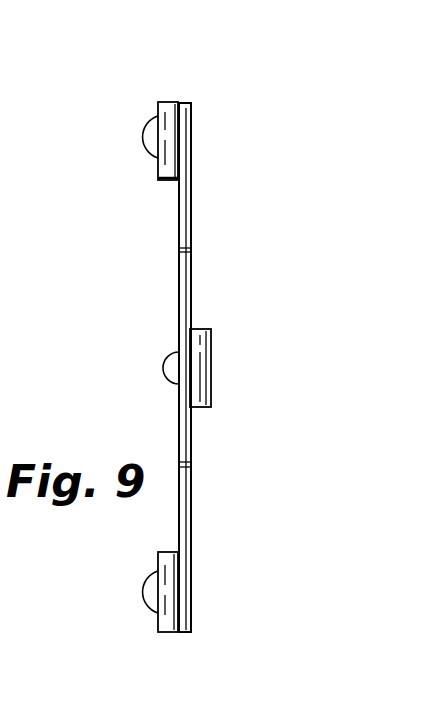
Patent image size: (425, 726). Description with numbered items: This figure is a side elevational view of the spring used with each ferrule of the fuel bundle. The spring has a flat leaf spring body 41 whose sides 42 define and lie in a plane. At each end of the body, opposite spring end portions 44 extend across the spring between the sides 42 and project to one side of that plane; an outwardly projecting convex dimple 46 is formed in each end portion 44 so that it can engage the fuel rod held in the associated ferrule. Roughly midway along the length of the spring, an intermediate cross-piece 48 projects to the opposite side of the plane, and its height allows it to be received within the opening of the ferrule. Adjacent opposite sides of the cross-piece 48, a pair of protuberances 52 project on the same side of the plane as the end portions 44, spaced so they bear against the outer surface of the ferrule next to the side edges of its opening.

The flat leaf spring body 41 is at (179, 275).
The sides 42 is at (191, 230).
The spring end portions 44 is at (167, 181).
The convex dimple 46 is at (150, 124).
The cross-piece 48 is at (203, 327).
The protuberances 52 is at (172, 383).